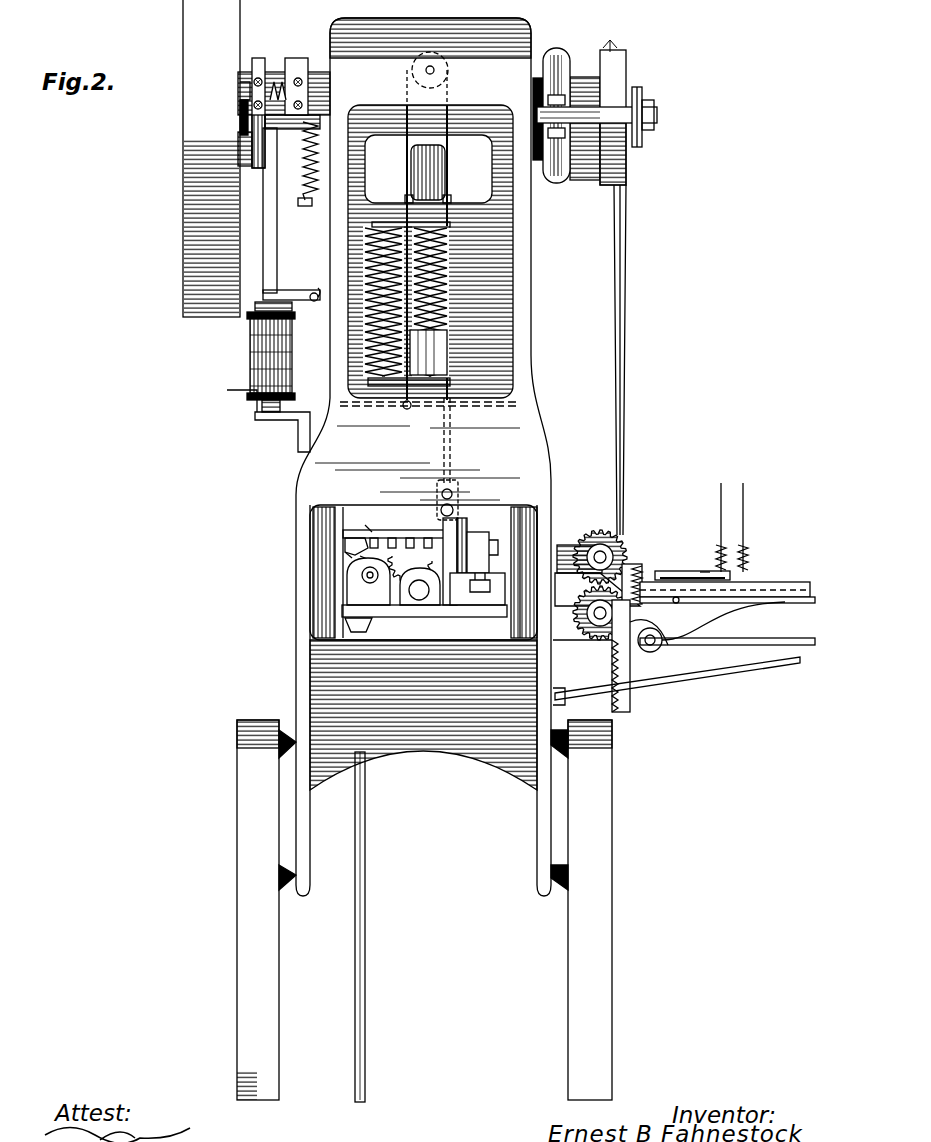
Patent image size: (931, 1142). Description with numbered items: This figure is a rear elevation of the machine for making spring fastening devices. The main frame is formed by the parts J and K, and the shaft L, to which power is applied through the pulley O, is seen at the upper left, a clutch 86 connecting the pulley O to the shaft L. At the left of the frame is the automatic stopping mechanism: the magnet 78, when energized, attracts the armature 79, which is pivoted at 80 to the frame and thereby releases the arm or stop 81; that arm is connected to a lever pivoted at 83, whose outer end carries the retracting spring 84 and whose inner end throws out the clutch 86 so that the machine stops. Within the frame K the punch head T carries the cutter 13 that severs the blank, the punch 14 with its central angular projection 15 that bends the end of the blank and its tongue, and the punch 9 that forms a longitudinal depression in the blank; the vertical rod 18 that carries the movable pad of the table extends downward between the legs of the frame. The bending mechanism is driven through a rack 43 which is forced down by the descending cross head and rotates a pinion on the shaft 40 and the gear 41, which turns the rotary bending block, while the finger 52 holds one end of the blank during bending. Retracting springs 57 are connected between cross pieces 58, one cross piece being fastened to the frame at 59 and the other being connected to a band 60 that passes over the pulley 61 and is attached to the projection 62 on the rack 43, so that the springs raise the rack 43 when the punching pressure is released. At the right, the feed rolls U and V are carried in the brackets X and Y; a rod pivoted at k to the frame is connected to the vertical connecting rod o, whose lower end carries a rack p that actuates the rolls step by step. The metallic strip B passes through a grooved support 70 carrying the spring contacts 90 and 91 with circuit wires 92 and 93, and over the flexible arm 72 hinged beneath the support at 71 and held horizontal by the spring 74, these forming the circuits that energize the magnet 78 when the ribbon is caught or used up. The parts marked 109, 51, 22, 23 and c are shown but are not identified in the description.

The pulley O is at (200, 237).
The shaft L is at (238, 113).
The clutch 86 is at (276, 73).
The pivot of lever 83 is at (256, 168).
The retracting spring 84 is at (306, 207).
The arm or stop 81 is at (272, 250).
The pivot of armature 80 is at (313, 303).
The armature 79 is at (262, 306).
The magnet 78 is at (252, 352).
The main frame K is at (329, 270).
The pulley 61 is at (442, 73).
The band 60 is at (406, 100).
The retracting springs 57 is at (375, 300).
The cross pieces 58 is at (395, 384).
The frame connection point 59 is at (406, 412).
The pivot of rod k is at (658, 116).
The vertical connecting rod o is at (626, 251).
The rack 109 is at (399, 529).
The punch 14 is at (360, 545).
The central angular projection 15 is at (347, 549).
The cutter 13 is at (363, 553).
The punch head T is at (372, 527).
The gear 41 is at (409, 564).
The cam 51 is at (373, 585).
The shaft 40 is at (420, 600).
The rack 43 is at (440, 555).
The arm or finger 52 is at (482, 545).
The projection 62 is at (460, 488).
The base bar 22 is at (366, 622).
The lug 23 is at (357, 633).
The bracket X is at (562, 546).
The feed roll U is at (603, 540).
The bracket Y is at (567, 615).
The punch 9 is at (644, 580).
The support 70 is at (750, 583).
The metallic strip B is at (780, 598).
The hinge point 71 is at (680, 602).
The flexible arm 72 is at (812, 618).
The spring 74 is at (742, 620).
The spring contact 90 is at (673, 571).
The spring contact 91 is at (697, 571).
The circuit wire 93 is at (720, 497).
The circuit wire 92 is at (745, 502).
The feed roll V is at (611, 656).
The rack p is at (630, 698).
The roller c is at (633, 655).
The main frame J is at (255, 890).
The vertical rod 18 is at (364, 813).